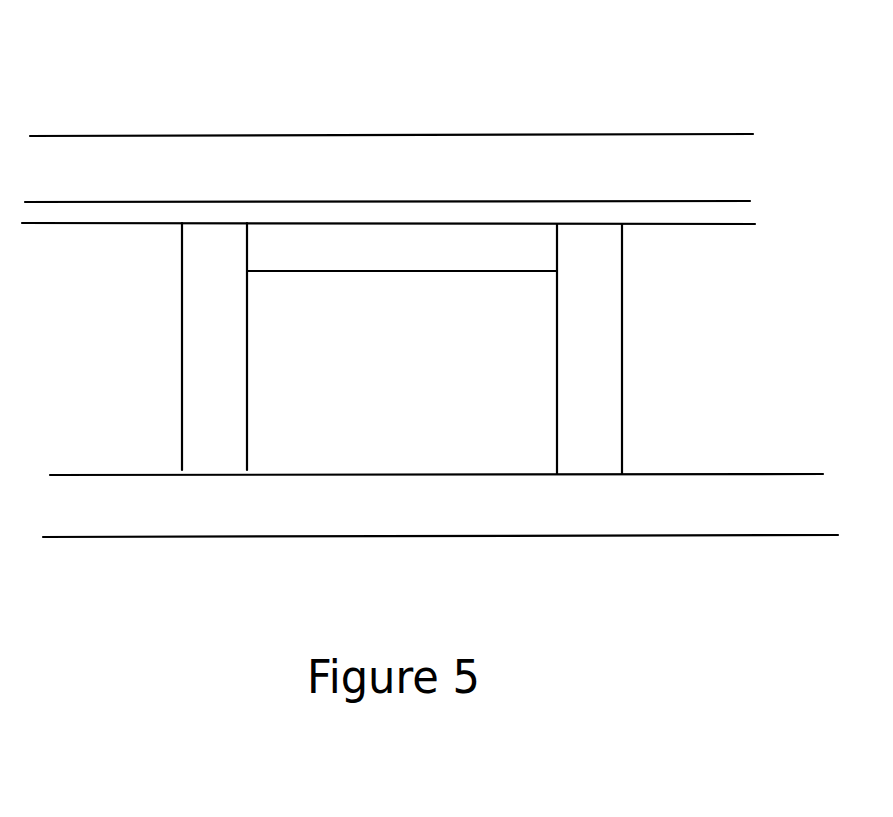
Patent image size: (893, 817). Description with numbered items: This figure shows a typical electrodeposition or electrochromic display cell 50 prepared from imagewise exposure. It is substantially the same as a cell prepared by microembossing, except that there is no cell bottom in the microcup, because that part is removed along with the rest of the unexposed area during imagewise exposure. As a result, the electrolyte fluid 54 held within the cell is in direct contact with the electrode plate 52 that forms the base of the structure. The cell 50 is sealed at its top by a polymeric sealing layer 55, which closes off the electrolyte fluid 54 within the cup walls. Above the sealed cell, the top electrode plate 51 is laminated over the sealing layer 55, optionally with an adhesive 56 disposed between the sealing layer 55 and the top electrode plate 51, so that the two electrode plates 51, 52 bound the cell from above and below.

The electrodeposition or electrochromic display cell 50 is at (667, 377).
The top electrode plate 51 is at (538, 168).
The electrode plate 52 is at (560, 517).
The electrolyte fluid 54 is at (290, 368).
The polymeric sealing layer 55 is at (308, 255).
The adhesive 56 is at (360, 217).